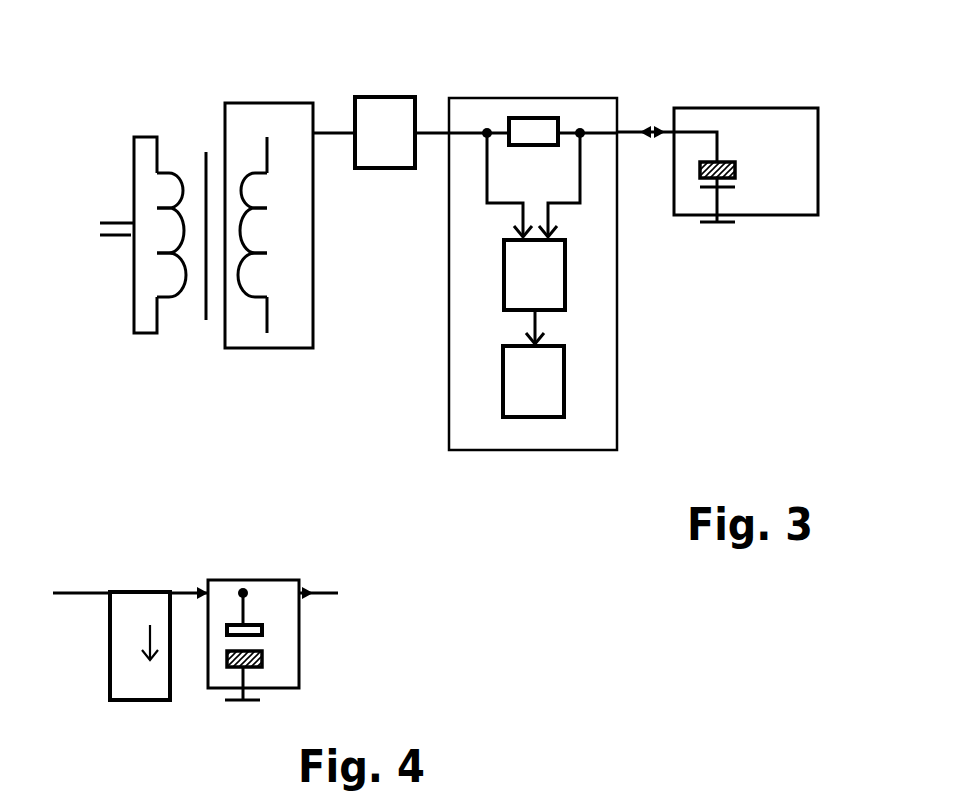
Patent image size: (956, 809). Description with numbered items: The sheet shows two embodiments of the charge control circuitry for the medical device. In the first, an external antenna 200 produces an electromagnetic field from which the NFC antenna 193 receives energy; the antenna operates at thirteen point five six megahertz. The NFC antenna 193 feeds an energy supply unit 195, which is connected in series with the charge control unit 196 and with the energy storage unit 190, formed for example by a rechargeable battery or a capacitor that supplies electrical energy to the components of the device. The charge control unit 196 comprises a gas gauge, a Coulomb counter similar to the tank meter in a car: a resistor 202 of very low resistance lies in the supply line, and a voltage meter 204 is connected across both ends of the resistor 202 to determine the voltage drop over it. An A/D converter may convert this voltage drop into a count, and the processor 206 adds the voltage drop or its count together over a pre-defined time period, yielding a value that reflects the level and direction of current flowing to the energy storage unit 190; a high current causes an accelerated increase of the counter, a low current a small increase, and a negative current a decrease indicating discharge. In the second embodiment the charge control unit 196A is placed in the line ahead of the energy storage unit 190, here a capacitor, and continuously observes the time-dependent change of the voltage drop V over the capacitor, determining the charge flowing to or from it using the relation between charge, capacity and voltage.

In FIG. 3, the energy storage unit 190 is at (728, 110).
In FIG. 4, the energy storage unit 190 is at (278, 592).
In FIG. 3, the NFC antenna 193 is at (247, 345).
In FIG. 3, the energy supply unit 195 is at (380, 162).
In FIG. 3, the charge control unit 196 is at (618, 368).
In FIG. 4, the charge control unit 196A is at (143, 685).
In FIG. 3, the external antenna 200 is at (135, 332).
In FIG. 3, the resistor 202 is at (545, 128).
In FIG. 3, the voltage meter 204 is at (553, 270).
In FIG. 3, the processor 206 is at (557, 408).